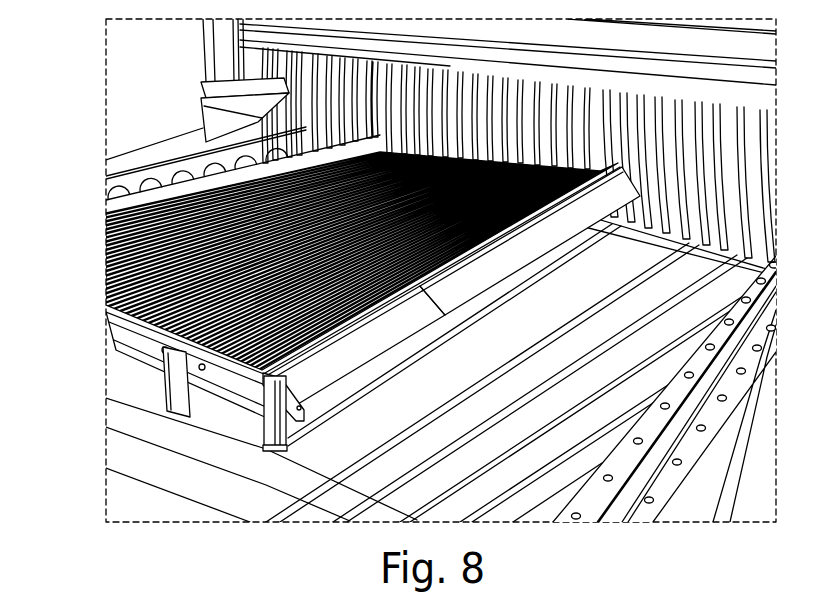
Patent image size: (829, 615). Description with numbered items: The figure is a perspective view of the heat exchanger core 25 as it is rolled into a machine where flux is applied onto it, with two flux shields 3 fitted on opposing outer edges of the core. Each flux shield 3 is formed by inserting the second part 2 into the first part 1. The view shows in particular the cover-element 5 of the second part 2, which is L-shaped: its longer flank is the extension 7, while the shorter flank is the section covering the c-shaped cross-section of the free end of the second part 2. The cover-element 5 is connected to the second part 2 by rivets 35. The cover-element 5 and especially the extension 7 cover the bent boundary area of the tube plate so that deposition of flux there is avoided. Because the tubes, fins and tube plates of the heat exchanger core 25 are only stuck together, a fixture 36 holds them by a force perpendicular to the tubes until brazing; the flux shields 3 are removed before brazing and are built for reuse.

The first part 1 is at (452, 293).
The second part 2 is at (377, 347).
The flux shield 3 is at (446, 338).
The cover-element 5 is at (283, 452).
The extension 7 is at (268, 430).
The heat exchanger core 25 is at (106, 283).
The rivets 35 is at (317, 408).
The fixture 36 is at (183, 394).